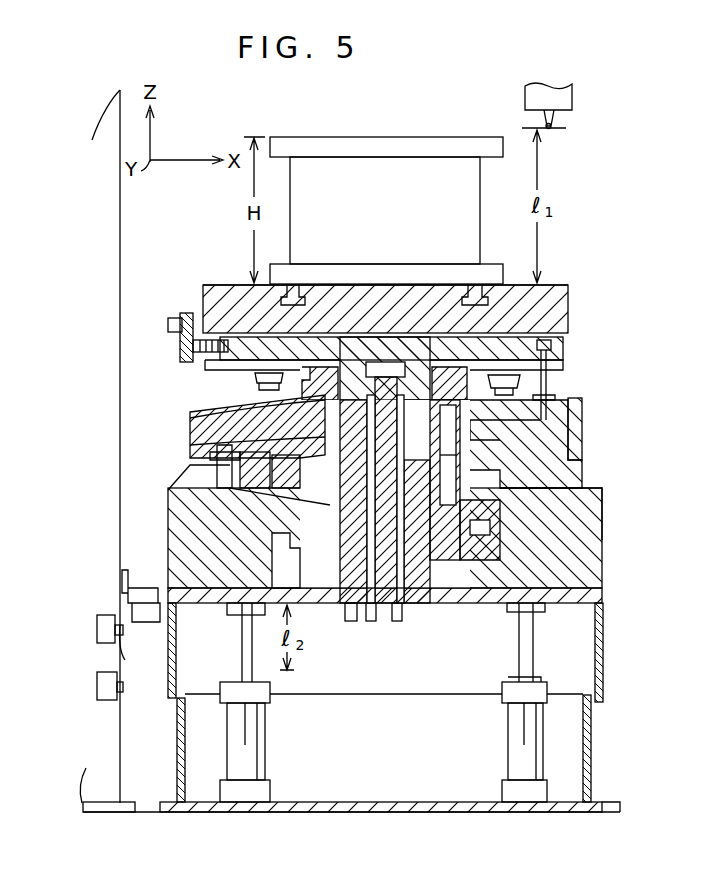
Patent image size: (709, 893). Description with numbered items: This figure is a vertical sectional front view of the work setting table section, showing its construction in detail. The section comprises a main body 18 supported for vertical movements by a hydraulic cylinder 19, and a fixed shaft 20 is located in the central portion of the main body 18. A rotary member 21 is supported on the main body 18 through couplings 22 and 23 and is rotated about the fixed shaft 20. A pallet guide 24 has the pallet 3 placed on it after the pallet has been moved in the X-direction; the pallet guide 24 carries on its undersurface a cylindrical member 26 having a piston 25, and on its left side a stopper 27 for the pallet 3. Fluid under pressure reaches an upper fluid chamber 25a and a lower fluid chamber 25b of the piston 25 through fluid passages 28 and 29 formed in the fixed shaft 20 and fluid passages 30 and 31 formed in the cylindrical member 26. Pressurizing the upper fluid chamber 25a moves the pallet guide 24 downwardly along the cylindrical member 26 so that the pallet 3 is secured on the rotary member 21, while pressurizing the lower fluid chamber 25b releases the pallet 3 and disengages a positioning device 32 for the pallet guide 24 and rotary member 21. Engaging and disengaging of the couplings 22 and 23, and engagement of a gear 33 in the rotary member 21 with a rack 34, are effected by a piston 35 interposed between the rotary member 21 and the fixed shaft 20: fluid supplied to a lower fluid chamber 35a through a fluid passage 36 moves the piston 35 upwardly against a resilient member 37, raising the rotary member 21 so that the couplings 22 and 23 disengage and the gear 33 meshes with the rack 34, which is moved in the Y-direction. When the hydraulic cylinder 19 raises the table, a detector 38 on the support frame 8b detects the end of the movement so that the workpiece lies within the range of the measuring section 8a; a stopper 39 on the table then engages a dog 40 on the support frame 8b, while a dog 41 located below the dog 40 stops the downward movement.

The pallet 3 is at (215, 284).
The measuring section 8a is at (553, 118).
The support frame 8b is at (112, 556).
The main body 18 is at (598, 556).
The hydraulic cylinder 19 is at (537, 752).
The fixed shaft 20 is at (417, 500).
The rotary member 21 is at (565, 425).
The coupling 22 is at (575, 440).
The coupling 23 is at (560, 500).
The pallet guide 24 is at (480, 340).
The piston 25 is at (195, 419).
The upper fluid chamber 25a is at (323, 394).
The lower fluid chamber 25b is at (192, 438).
The cylindrical member 26 is at (352, 368).
The stopper 27 is at (200, 320).
The fluid passage 28 is at (383, 610).
The fluid passage 29 is at (412, 600).
The fluid passage 30 is at (262, 383).
The fluid passage 31 is at (540, 418).
The positioning device 32 is at (560, 372).
The gear 33 is at (437, 572).
The rack 34 is at (500, 550).
The piston 35 is at (355, 480).
The lower fluid chamber 35a is at (300, 508).
The fluid passage 36 is at (330, 603).
The resilient member 37 is at (205, 452).
The detector 38 is at (118, 563).
The stopper 39 is at (128, 622).
The dog 40 is at (122, 640).
The dog 41 is at (118, 692).